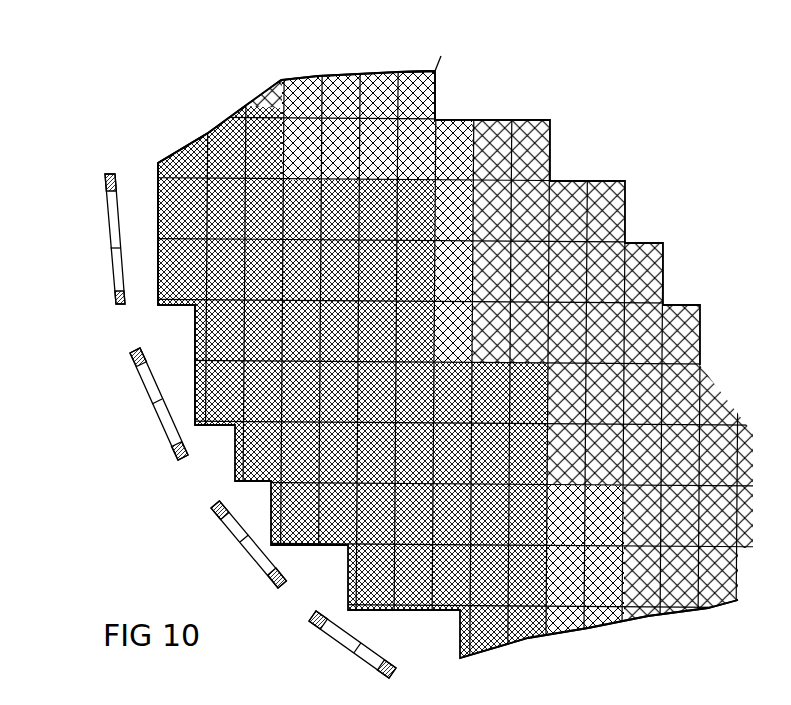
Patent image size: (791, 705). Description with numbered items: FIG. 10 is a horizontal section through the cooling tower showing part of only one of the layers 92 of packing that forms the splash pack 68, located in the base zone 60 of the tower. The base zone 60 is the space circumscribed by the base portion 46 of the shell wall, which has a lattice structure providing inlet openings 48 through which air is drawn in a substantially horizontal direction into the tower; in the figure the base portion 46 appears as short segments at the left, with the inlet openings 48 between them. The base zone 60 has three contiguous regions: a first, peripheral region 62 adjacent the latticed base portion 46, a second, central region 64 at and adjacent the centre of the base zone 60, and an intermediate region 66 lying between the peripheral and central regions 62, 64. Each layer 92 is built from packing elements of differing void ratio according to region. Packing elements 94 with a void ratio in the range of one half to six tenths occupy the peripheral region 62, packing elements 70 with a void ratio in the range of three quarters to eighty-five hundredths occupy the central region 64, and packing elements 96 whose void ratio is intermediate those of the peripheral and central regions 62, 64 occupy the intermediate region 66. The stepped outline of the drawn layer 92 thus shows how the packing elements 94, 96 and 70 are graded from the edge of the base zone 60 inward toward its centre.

The base portion 46 is at (85, 170).
The inlet openings 48 is at (114, 328).
The base zone 60 is at (190, 100).
The peripheral region 62 is at (182, 256).
The central region 64 is at (478, 152).
The intermediate region 66 is at (327, 100).
The splash pack 68 is at (438, 89).
The packing elements 70 is at (543, 135).
The layers 92 is at (152, 150).
The packing elements 94 is at (246, 85).
The packing elements 96 is at (381, 62).